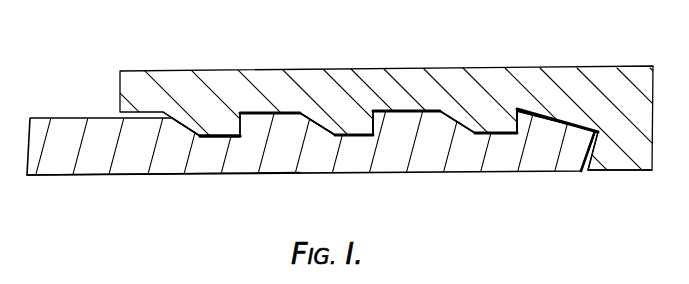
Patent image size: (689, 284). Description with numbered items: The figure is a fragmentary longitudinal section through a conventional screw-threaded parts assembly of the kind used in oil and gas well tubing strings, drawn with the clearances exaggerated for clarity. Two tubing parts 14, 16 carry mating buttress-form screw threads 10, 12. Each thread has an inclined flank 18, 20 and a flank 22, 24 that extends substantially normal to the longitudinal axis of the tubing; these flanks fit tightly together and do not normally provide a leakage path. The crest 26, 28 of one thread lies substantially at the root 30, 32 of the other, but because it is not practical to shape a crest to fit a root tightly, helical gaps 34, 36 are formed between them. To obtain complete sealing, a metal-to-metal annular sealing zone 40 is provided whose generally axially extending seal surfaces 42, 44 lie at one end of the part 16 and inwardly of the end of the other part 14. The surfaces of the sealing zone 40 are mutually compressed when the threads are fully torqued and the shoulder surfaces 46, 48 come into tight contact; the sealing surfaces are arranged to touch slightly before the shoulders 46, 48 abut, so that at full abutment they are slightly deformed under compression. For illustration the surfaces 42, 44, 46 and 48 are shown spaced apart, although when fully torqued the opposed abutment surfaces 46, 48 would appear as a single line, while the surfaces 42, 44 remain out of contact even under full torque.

The screw thread 10 is at (328, 112).
The screw thread 12 is at (280, 122).
The part 14 is at (182, 93).
The part 16 is at (165, 163).
The inclined flank 18 is at (170, 110).
The inclined flank 20 is at (320, 142).
The flank 22 is at (513, 122).
The flank 24 is at (490, 135).
The crest 26 is at (493, 131).
The crest 28 is at (402, 112).
The root 30 is at (204, 137).
The root 32 is at (278, 110).
The helical gap 34 is at (219, 132).
The helical gap 36 is at (303, 93).
The metal-to-metal annular sealing zone 40 is at (575, 140).
The seal surface 42 is at (556, 150).
The seal surface 44 is at (561, 112).
The shoulder surface 46 is at (600, 150).
The shoulder surface 48 is at (583, 148).